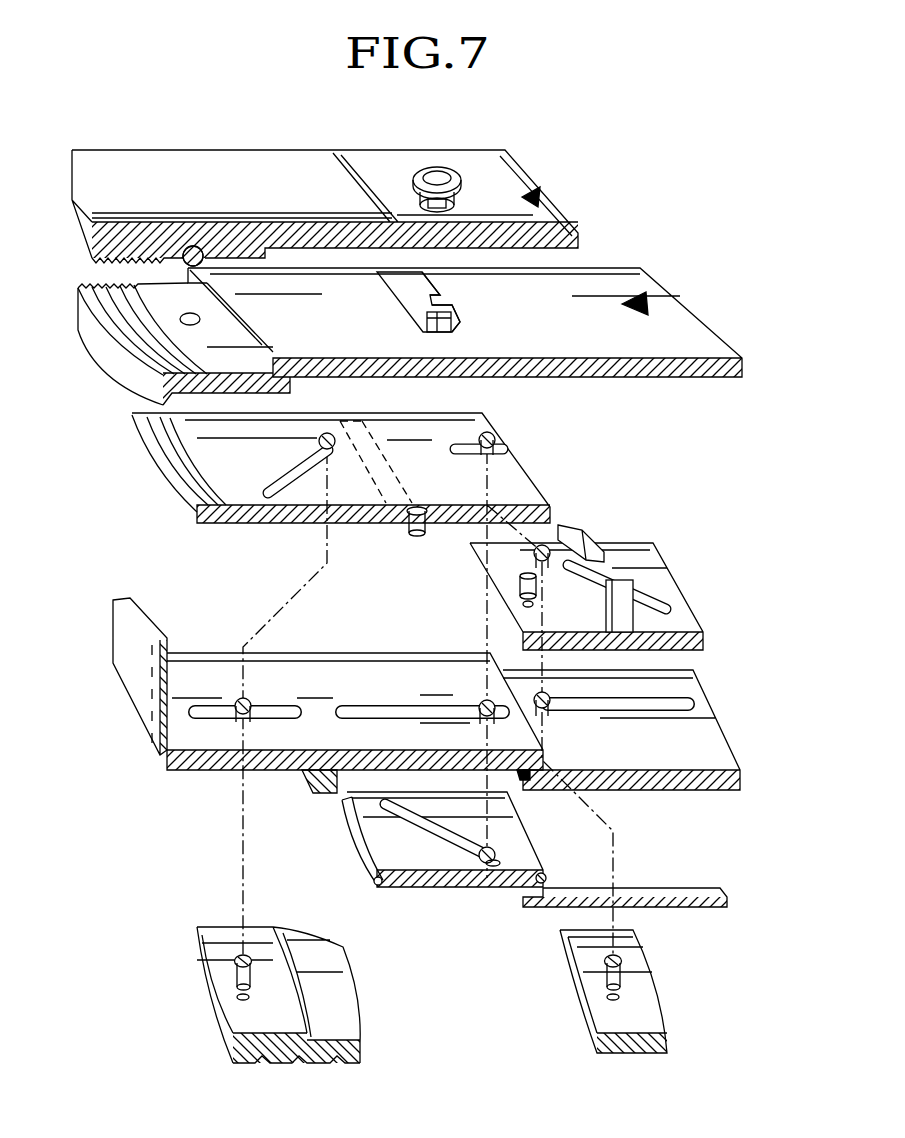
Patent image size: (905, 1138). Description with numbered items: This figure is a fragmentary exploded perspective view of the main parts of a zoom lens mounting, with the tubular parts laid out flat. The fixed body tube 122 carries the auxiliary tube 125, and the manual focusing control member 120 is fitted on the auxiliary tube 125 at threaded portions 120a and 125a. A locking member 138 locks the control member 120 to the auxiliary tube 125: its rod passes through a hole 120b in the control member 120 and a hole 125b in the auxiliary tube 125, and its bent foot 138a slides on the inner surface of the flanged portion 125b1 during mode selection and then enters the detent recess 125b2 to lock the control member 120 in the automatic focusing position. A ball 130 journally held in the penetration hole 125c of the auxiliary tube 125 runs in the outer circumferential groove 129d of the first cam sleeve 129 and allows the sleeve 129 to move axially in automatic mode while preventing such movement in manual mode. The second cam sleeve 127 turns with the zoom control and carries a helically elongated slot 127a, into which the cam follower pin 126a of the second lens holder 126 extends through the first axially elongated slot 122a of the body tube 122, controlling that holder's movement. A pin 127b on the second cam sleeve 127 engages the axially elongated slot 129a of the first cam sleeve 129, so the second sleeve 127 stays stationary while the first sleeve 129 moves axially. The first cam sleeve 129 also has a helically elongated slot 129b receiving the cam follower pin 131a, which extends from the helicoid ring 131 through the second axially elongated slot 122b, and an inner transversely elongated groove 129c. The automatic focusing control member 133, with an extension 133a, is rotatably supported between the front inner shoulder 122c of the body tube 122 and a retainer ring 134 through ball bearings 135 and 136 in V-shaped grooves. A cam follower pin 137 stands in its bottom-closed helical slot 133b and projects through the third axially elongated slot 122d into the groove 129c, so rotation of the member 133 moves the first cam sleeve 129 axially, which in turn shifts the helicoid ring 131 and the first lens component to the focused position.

The manual focusing control member 120 is at (280, 175).
The threaded portion 120a is at (131, 256).
The hole 120b is at (200, 247).
The locking member 138 is at (437, 172).
The foot 138a is at (437, 332).
The auxiliary tube 125 is at (682, 322).
The threaded portion 125a is at (122, 318).
The hole 125b is at (407, 294).
The detent recess (flanged portion) 125b1 is at (440, 300).
The detent recess 125b2 is at (460, 328).
The penetration hole 125c is at (188, 328).
The ball 130 is at (223, 303).
The first cam sleeve 129 is at (530, 492).
The axially elongated slot 129a is at (508, 452).
The helically elongated slot 129b is at (288, 487).
The inner transversely elongated groove 129c is at (385, 505).
The outer circumferential groove 129d is at (222, 510).
The cam follower pin 131a is at (326, 436).
The cam follower pin 137 is at (425, 530).
The second cam sleeve 127 is at (634, 558).
The helically elongated slot 127a is at (655, 607).
The pin 127b is at (520, 585).
The cam follower pin 126a is at (544, 562).
The body tube 122 is at (695, 756).
The first axially elongated slot 122a is at (680, 700).
The second axially elongated slot 122b is at (212, 720).
The front inner shoulder 122c is at (525, 783).
The third axially elongated slot 122d is at (355, 708).
The retainer ring 134 is at (325, 790).
The automatic focusing control member 133 is at (425, 860).
The extension strip 133a is at (690, 895).
The bottom-closed helical slot 133b is at (462, 852).
The ball bearing 135 is at (378, 886).
The ball bearing 136 is at (557, 862).
The helicoid ring 131 is at (284, 1020).
The second lens holder 126 is at (650, 1008).